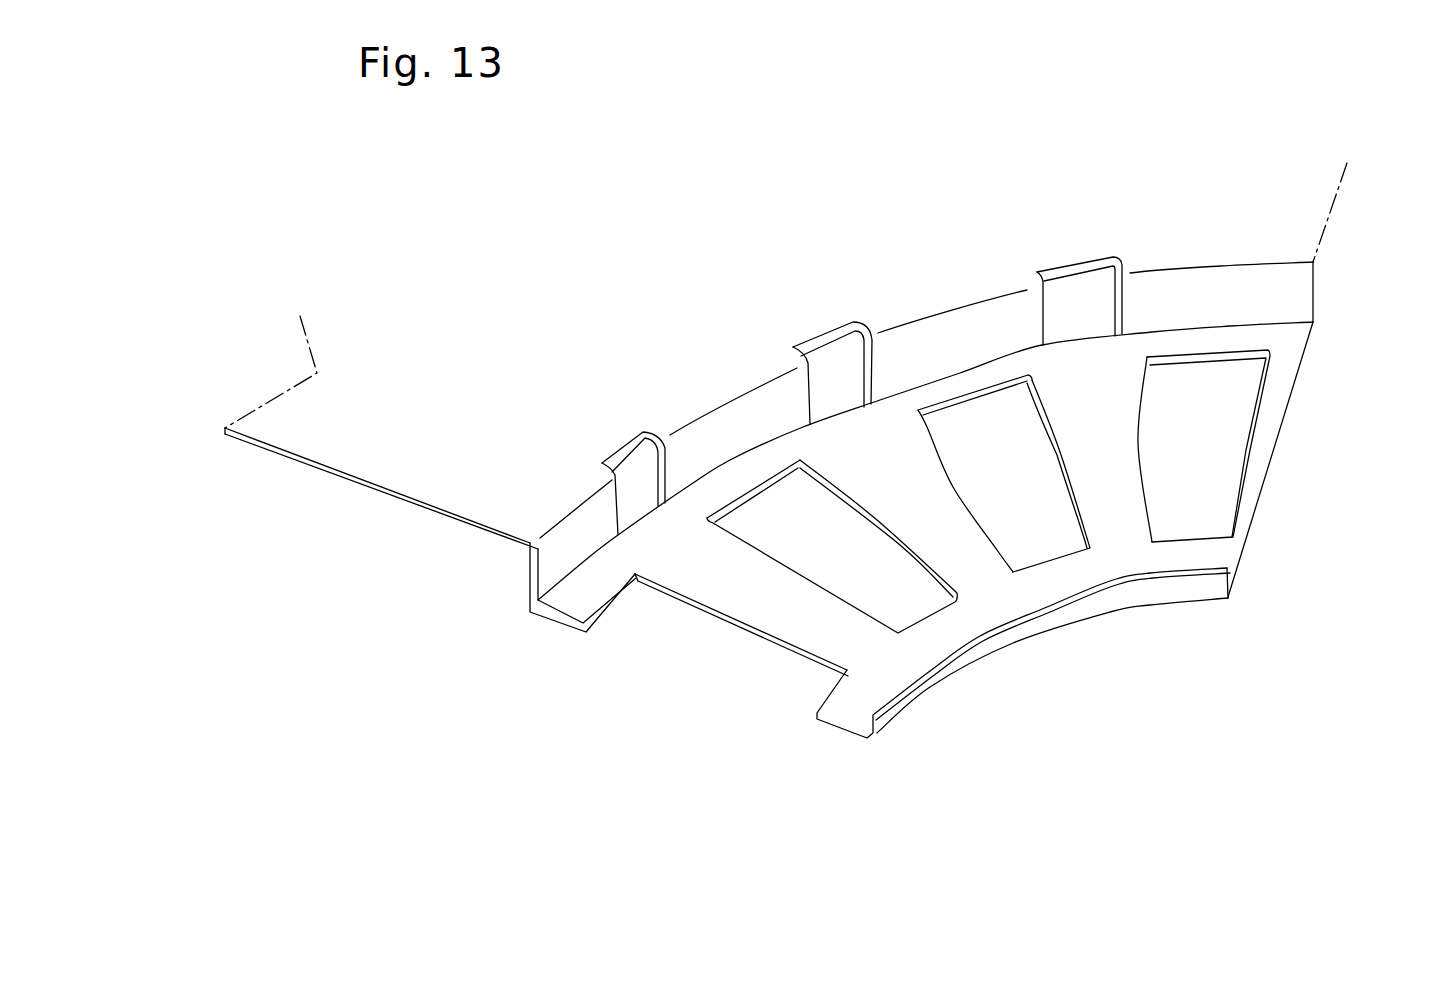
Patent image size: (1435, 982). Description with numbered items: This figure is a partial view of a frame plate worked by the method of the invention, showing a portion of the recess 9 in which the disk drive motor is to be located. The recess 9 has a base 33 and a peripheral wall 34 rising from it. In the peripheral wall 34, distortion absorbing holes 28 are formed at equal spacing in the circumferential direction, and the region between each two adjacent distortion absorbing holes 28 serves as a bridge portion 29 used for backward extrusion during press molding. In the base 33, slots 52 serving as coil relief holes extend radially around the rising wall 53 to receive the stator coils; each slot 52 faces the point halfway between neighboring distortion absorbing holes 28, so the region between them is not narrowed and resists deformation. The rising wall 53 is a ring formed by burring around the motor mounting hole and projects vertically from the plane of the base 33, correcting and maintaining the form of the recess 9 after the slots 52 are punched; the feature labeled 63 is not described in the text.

The recess 9 is at (1152, 330).
The distortion absorbing hole 28 is at (627, 473).
The bridge portion 29 is at (783, 345).
The base 33 is at (1265, 580).
The peripheral wall 34 is at (513, 553).
The slot 52 is at (1003, 423).
The rising wall 53 is at (993, 634).
The end tab 63 is at (877, 736).